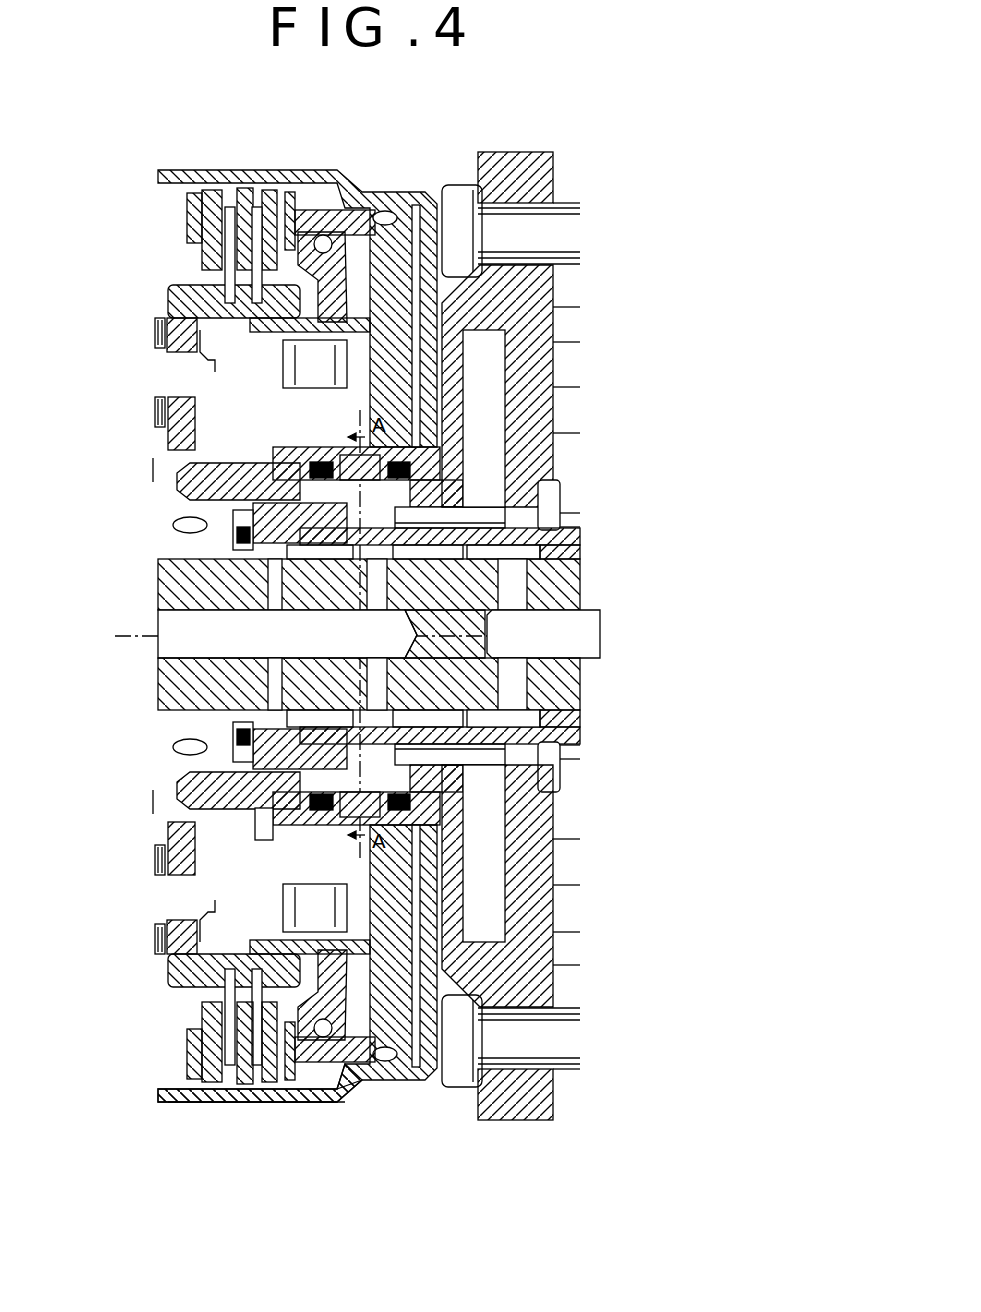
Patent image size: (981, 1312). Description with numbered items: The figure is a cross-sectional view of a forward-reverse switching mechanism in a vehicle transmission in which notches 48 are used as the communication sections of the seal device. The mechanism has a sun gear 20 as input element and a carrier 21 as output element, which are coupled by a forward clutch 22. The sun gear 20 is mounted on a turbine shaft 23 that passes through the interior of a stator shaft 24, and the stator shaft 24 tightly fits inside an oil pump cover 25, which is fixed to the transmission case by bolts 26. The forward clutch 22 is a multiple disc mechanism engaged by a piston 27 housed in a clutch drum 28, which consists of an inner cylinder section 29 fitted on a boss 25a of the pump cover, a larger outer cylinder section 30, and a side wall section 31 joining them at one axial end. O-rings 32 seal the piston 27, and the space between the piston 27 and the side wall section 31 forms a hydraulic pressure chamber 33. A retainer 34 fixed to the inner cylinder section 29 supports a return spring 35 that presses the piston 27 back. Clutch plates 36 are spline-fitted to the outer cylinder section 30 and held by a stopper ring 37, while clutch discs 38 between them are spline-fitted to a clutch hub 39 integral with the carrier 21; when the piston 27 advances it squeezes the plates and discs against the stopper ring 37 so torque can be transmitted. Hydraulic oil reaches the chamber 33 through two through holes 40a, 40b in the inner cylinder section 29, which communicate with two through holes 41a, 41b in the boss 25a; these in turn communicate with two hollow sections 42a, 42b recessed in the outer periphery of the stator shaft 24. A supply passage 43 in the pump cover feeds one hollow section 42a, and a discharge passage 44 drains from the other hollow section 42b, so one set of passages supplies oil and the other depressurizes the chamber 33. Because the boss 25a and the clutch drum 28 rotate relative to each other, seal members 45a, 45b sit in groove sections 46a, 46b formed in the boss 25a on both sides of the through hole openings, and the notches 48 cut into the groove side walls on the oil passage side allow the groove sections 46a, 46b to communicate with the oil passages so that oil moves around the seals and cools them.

The sun gear 20 is at (170, 747).
The carrier 21 is at (131, 917).
The forward clutch 22 is at (135, 1051).
The turbine shaft 23 is at (558, 701).
The stator shaft 24 is at (593, 751).
The oil pump cover 25 is at (593, 907).
The boss 25a is at (180, 794).
The bolts 26 is at (565, 240).
The piston 27 is at (350, 1083).
The clutch drum 28 is at (256, 1157).
The inner cylinder section 29 is at (167, 836).
The outer cylinder section 30 is at (260, 1112).
The side wall section 31 is at (463, 950).
The O-rings 32 is at (261, 773).
The hydraulic pressure chamber 33 is at (545, 886).
The retainer 34 is at (204, 960).
The return spring 35 is at (182, 971).
The clutch plates 36 is at (231, 1081).
The stopper ring 37 is at (190, 1050).
The clutch discs 38 is at (184, 1017).
The clutch hub 39 is at (354, 1122).
The through hole 40a is at (465, 434).
The through hole 40b is at (465, 811).
The through hole 41a is at (583, 504).
The through hole 41b is at (534, 781).
The hollow section 42a is at (478, 529).
The hollow section 42b is at (505, 718).
The supply passage 43 is at (542, 329).
The discharge passage 44 is at (574, 856).
The seal member 45a is at (176, 484).
The seal member 45b is at (484, 450).
The groove section 46a is at (149, 531).
The groove section 46b is at (544, 462).
The notches 48 is at (213, 551).